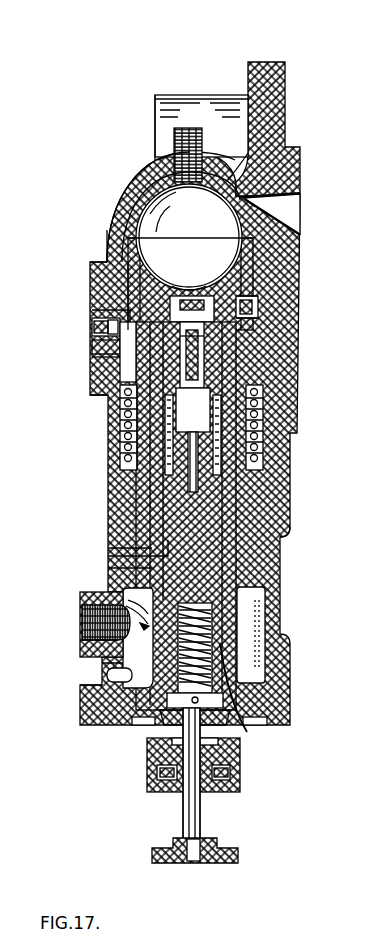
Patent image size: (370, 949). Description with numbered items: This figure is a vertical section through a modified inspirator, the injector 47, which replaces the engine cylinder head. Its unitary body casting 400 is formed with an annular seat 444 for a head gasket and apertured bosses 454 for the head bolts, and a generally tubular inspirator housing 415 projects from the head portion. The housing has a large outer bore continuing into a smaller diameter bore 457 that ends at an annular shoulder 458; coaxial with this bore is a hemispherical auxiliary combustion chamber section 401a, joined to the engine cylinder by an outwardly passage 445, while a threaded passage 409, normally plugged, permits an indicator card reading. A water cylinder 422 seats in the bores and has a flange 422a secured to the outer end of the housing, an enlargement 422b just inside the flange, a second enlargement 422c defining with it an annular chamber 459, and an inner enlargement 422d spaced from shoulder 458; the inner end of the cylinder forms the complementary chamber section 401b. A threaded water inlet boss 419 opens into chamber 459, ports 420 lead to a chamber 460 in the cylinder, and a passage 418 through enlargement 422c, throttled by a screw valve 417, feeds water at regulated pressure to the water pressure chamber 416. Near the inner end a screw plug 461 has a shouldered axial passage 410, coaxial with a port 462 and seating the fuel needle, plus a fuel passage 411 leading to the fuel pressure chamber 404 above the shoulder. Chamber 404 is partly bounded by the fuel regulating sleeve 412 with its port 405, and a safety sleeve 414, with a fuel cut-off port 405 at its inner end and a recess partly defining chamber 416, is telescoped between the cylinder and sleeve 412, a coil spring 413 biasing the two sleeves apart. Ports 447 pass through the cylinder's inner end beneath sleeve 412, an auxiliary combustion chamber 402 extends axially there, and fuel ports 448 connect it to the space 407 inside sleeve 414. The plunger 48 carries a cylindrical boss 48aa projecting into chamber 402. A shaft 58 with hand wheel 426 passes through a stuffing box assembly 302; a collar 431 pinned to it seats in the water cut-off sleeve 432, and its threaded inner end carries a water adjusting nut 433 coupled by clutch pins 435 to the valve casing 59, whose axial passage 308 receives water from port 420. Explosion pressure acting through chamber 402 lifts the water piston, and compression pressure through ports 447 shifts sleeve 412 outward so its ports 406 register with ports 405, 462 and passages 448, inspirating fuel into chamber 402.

The unitary body casting 400 is at (146, 162).
The annular seat 444 is at (288, 85).
The threaded passage 409 is at (192, 165).
The apertured bosses 454 is at (160, 118).
The outwardly passage 445 is at (240, 166).
The auxiliary combustion chamber section 401a is at (134, 186).
The ports 406 is at (190, 284).
The ports 447 is at (168, 224).
The cylindrical boss 48aa is at (190, 249).
The auxiliary combustion chamber 402 is at (192, 294).
The water pressure chamber 416 is at (140, 537).
The fuel cut-off port 405 is at (193, 440).
The coil spring 413 is at (122, 402).
The inspirator housing 415 is at (122, 432).
The safety sleeve 414 is at (140, 442).
The fuel regulating sleeve 412 is at (92, 384).
The screw plug 461 is at (92, 330).
The shouldered axial passage 410 is at (110, 328).
The port 462 is at (92, 348).
The fuel passage 411 is at (110, 356).
The fuel pressure chamber 404 is at (122, 370).
The enlargement 422d is at (130, 319).
The auxiliary combustion chamber section 401b is at (132, 276).
The smaller diameter bore 457 is at (132, 258).
The annular shoulder 458 is at (108, 236).
The space 407 is at (262, 300).
The fuel ports 448 is at (247, 316).
The injector 47 is at (106, 460).
The piston or plunger 48 is at (138, 471).
The screw valve 417 is at (108, 553).
The axial passage 308 is at (152, 556).
The passage 418 is at (130, 570).
The clutch pins 435 is at (125, 592).
The annular chamber 459 is at (124, 605).
The water cylinder 422 is at (90, 614).
The water inlet boss 419 is at (105, 641).
The ports 420 is at (150, 660).
The valve casing 59 is at (251, 635).
The second enlargement 422c is at (268, 562).
The collar 431 is at (164, 722).
The water cut-off sleeve 432 is at (108, 678).
The enlargement 422b is at (90, 690).
The flange 422a is at (118, 726).
The stuffing box assembly 302 is at (144, 780).
The water adjusting nut 433 is at (230, 768).
The chamber 460 is at (238, 728).
The shaft 58 is at (182, 814).
The hand wheel 426 is at (152, 852).